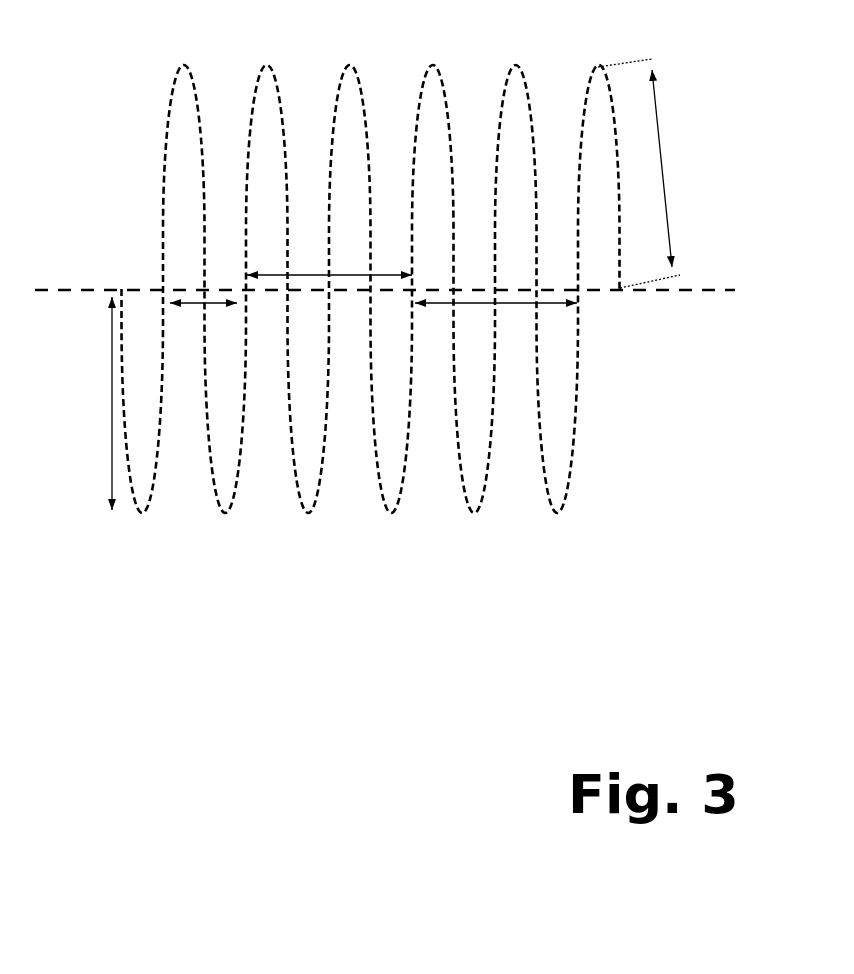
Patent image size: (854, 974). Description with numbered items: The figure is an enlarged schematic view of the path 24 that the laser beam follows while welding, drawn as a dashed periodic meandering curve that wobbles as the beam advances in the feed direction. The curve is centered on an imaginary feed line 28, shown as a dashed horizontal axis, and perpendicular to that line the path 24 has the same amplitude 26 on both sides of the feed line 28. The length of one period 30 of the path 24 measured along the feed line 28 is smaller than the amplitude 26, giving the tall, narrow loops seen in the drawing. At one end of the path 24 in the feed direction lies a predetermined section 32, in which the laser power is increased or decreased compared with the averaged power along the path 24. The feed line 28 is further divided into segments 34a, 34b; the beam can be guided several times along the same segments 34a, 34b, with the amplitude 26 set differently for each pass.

The path of the laser beam 24 is at (225, 514).
The amplitude 26 is at (110, 389).
The imaginary feed line 28 is at (71, 287).
The period 30 is at (195, 305).
The predetermined section 32 is at (657, 120).
The segment 34a is at (310, 275).
The segment 34b is at (515, 303).